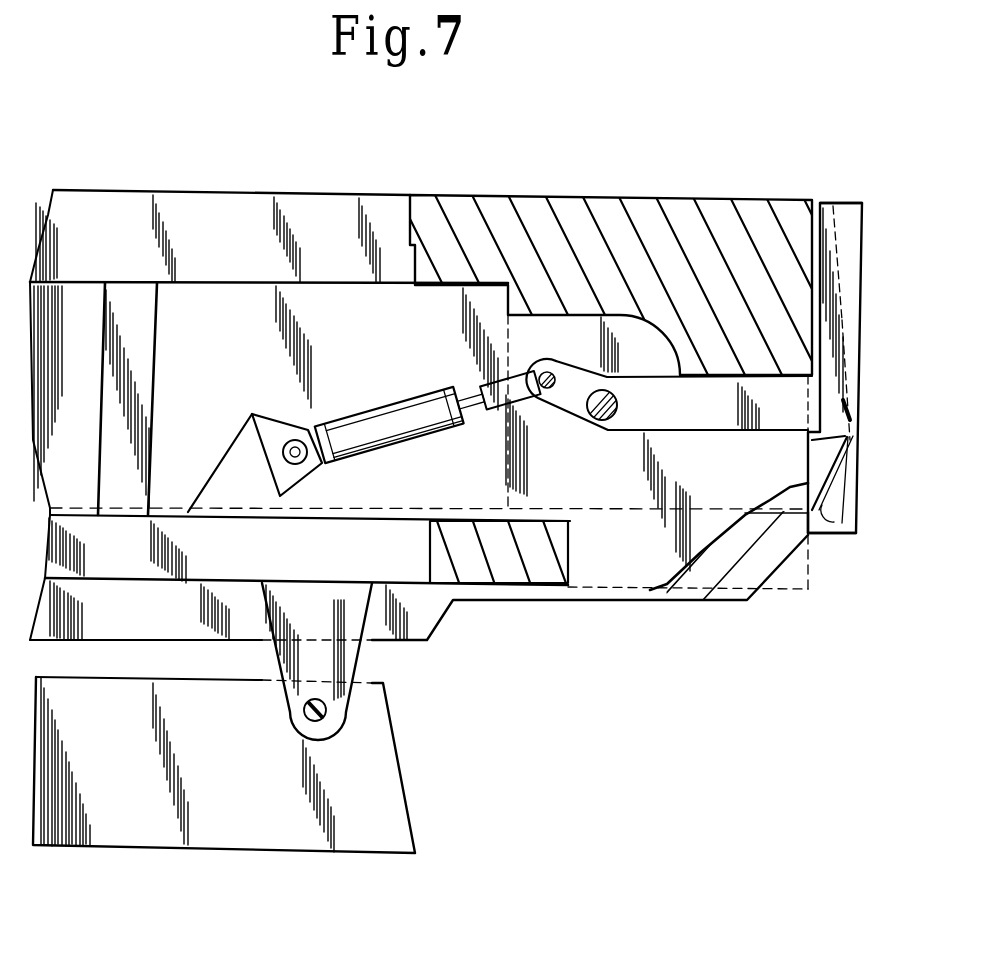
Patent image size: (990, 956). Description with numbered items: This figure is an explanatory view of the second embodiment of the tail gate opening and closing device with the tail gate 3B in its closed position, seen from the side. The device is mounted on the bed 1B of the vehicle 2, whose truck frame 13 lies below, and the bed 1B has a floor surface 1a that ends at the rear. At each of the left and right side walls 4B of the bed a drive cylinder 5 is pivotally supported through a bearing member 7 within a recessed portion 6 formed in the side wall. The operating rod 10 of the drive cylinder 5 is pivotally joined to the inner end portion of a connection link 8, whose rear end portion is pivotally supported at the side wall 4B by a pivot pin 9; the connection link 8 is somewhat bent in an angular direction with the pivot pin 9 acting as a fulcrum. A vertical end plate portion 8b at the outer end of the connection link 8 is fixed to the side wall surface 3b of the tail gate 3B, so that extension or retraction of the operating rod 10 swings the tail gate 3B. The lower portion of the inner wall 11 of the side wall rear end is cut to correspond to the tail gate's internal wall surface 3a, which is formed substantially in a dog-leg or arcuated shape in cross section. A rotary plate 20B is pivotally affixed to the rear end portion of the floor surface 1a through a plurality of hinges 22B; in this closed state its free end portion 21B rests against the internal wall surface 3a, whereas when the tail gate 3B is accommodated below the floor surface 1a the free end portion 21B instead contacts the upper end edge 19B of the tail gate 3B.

The bed 1B is at (700, 198).
The floor surface 1a is at (786, 500).
The vehicle 2 is at (818, 192).
The tail gate 3B is at (870, 280).
The internal wall surface 3a is at (830, 540).
The side wall surfaces 3b is at (838, 520).
The side walls 4B is at (370, 194).
The drive cylinders 5 is at (380, 410).
The recessed portions 6 is at (333, 313).
The bearing members 7 is at (282, 425).
The connection links 8 is at (738, 437).
The vertical end plate portions 8b is at (838, 330).
The pivot pins 9 is at (605, 422).
The operating rods 10 is at (468, 395).
The inner walls 11 is at (605, 600).
The truck frame 13 is at (385, 748).
The upper end edge 19B is at (845, 205).
The rotary plate 20B is at (840, 467).
The free end portion 21B is at (858, 405).
The hinges 22B is at (818, 538).